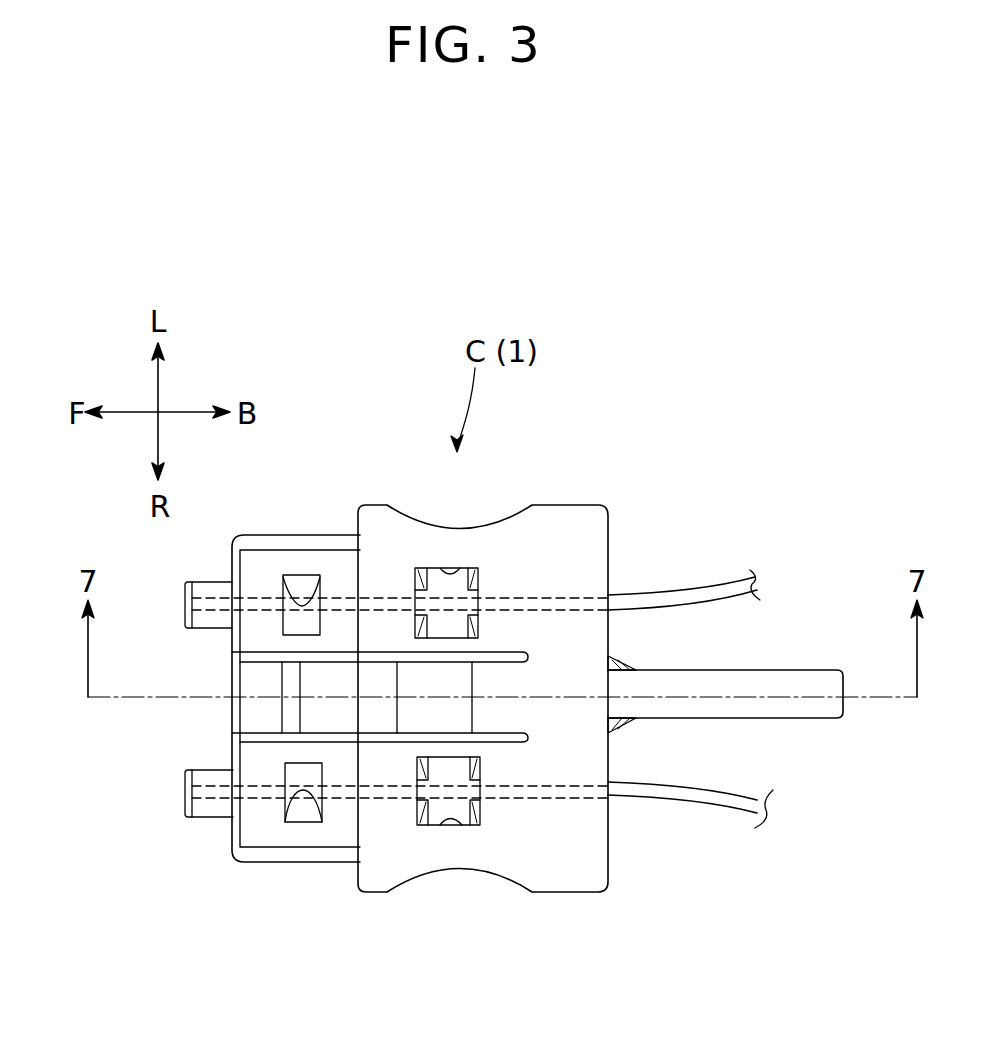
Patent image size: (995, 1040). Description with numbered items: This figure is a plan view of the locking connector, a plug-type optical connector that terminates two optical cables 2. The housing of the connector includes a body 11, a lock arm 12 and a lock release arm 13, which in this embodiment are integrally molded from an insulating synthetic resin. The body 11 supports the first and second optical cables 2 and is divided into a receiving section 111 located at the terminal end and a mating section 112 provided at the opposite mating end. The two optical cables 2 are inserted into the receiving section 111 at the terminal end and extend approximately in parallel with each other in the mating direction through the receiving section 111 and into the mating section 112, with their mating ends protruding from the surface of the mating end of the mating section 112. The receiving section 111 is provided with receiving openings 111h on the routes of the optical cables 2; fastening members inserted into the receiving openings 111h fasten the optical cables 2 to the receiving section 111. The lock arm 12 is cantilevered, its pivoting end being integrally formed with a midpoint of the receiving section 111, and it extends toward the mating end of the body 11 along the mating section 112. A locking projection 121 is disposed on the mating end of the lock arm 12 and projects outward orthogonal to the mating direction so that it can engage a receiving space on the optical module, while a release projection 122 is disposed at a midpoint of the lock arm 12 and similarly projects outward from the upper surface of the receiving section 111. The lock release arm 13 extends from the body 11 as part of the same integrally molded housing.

The optical cable 2 is at (677, 782).
The body 11 is at (396, 742).
The lock arm 12 is at (306, 705).
The lock release arm 13 is at (768, 670).
The receiving section 111 is at (472, 713).
The mating section 112 is at (285, 863).
The receiving opening 111h is at (458, 572).
The locking projection 121 is at (243, 710).
The release projection 122 is at (400, 706).